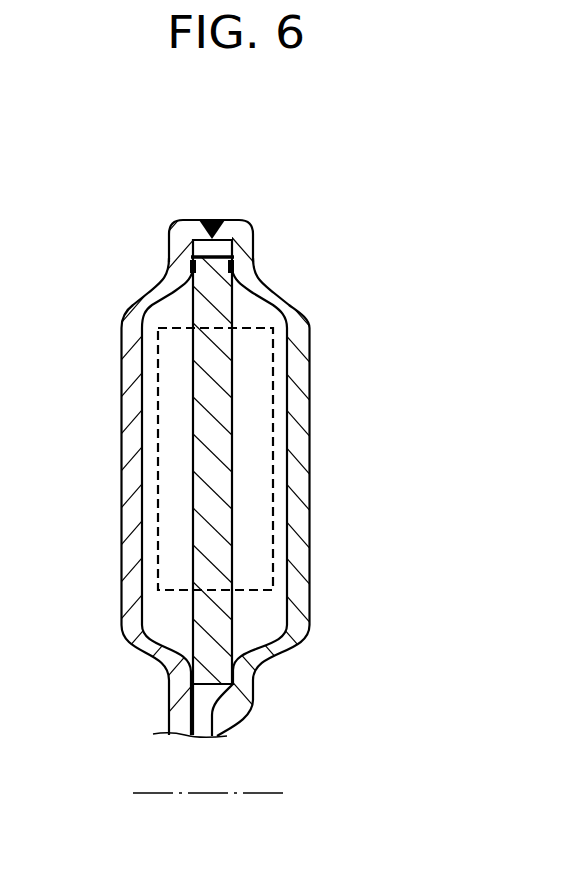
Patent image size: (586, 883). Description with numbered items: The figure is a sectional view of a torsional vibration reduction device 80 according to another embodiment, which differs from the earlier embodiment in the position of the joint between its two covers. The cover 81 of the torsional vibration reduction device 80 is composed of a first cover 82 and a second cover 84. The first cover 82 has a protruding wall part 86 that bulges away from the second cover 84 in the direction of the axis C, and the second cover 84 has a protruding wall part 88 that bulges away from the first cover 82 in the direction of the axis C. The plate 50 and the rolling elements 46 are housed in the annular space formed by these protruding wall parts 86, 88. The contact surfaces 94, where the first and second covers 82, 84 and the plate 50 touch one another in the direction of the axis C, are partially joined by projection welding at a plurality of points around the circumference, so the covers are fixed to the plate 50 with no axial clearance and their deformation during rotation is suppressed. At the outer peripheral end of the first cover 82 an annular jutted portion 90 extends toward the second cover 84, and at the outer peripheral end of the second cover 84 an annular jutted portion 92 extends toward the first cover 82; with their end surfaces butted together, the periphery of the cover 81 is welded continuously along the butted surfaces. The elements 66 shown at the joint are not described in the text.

The torsional vibration reduction device 80 is at (413, 475).
The cover 81 is at (288, 257).
The first cover 82 is at (105, 362).
The second cover 84 is at (328, 385).
The protruding wall part 86 is at (130, 487).
The protruding wall part 88 is at (297, 482).
The annular jutted portion 90 is at (198, 232).
The annular jutted portion 92 is at (221, 233).
The contact surfaces 94 is at (188, 260).
The retaining element 66 is at (190, 267).
The rolling elements 46 is at (172, 528).
The plate 50 is at (213, 545).
The axis C is at (228, 794).